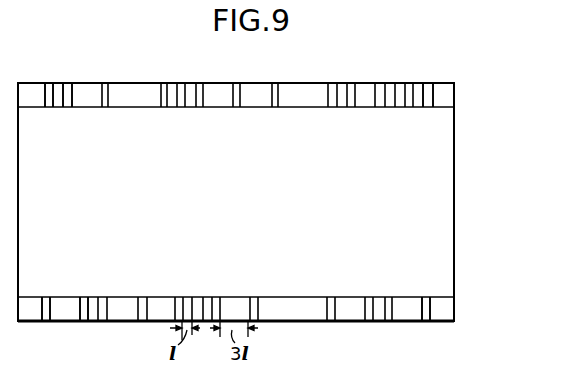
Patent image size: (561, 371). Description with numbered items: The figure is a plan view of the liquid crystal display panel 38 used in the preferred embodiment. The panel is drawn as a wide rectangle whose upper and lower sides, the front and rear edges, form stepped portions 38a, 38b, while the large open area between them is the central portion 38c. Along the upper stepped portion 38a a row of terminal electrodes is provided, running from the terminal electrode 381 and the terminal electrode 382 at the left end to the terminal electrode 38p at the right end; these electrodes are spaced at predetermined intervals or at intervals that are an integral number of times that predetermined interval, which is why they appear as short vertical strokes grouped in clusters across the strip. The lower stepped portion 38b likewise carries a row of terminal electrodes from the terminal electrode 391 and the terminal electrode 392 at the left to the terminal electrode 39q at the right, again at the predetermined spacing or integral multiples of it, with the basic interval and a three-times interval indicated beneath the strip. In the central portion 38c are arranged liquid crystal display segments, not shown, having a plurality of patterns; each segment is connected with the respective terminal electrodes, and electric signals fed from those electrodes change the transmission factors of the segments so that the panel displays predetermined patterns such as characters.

The liquid crystal display panel 38 is at (455, 230).
The stepped portion 38a is at (448, 95).
The stepped portion 38b is at (440, 305).
The central portion 38c is at (440, 170).
The terminal electrode 38p is at (427, 83).
The terminal electrode 381 is at (50, 82).
The terminal electrode 382 is at (68, 83).
The terminal electrode 391 is at (45, 325).
The terminal electrode 392 is at (82, 325).
The terminal electrode 39q is at (425, 322).